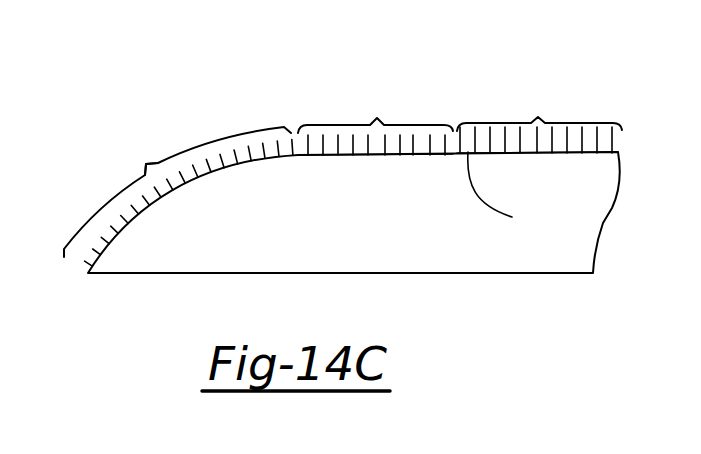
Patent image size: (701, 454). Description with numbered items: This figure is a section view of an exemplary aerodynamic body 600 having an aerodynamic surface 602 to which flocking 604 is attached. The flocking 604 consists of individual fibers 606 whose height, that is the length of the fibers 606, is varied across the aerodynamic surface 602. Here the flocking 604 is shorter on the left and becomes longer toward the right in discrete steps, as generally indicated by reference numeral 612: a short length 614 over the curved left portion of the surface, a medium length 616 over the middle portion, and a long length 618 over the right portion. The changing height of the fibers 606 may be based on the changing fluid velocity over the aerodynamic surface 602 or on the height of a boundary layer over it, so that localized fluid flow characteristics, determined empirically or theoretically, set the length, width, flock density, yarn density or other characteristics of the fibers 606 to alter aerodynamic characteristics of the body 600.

The aerodynamic body 600 is at (380, 243).
The aerodynamic surface 602 is at (511, 192).
The flocking 604 is at (232, 101).
The fibers 606 is at (432, 80).
The stepped flocking length variation 612 is at (338, 76).
The short length 614 is at (132, 155).
The medium length 616 is at (375, 122).
The long length 618 is at (539, 120).